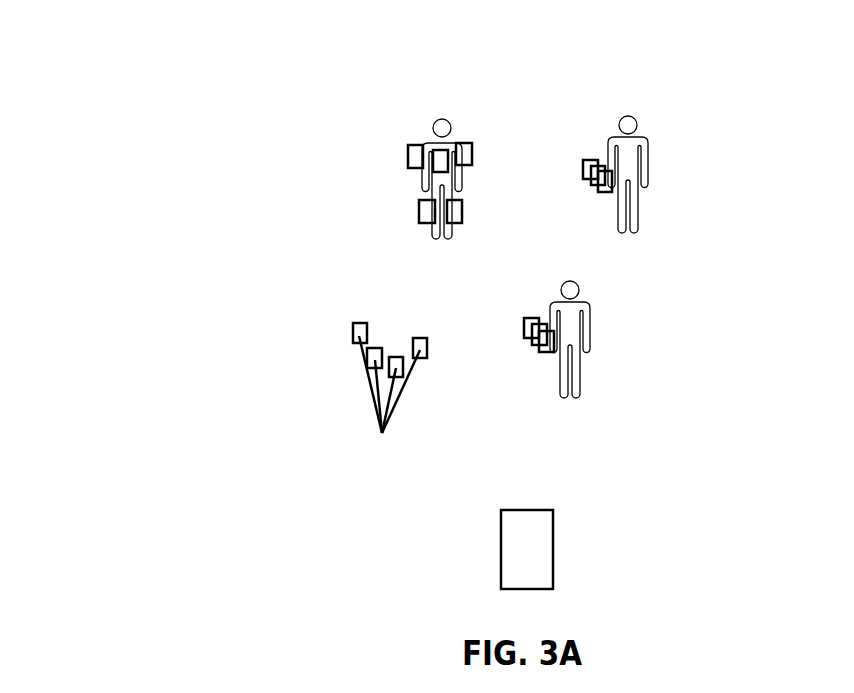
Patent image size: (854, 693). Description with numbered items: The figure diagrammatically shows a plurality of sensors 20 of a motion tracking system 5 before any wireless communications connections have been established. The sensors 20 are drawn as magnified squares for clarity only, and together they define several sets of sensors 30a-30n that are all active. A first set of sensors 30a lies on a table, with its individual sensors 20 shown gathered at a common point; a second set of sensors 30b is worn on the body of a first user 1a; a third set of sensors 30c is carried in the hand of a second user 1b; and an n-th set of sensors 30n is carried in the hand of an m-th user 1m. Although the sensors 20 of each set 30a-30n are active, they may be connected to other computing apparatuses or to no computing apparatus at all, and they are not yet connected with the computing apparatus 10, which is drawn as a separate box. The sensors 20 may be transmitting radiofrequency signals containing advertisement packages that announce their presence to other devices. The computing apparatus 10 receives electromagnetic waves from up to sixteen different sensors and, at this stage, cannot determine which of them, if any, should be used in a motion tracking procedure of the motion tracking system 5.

The first user 1a is at (446, 151).
The second user 1b is at (622, 146).
The m-th user 1m is at (563, 308).
The first set of sensors 30a is at (343, 305).
The second set of sensors 30b is at (404, 155).
The third set of sensors 30c is at (667, 153).
The n-th set of sensors 30n is at (615, 317).
The sensors 20 is at (389, 404).
The computing apparatus 10 is at (540, 535).
The motion tracking system 5 is at (232, 496).